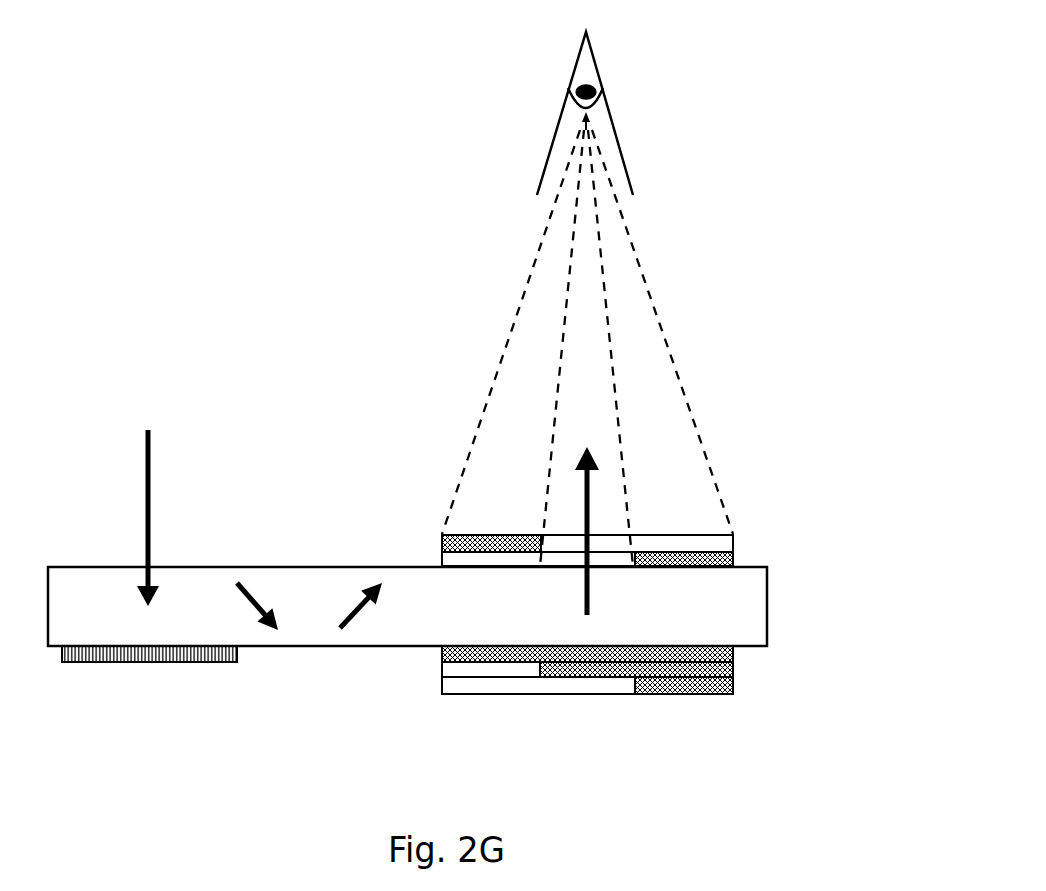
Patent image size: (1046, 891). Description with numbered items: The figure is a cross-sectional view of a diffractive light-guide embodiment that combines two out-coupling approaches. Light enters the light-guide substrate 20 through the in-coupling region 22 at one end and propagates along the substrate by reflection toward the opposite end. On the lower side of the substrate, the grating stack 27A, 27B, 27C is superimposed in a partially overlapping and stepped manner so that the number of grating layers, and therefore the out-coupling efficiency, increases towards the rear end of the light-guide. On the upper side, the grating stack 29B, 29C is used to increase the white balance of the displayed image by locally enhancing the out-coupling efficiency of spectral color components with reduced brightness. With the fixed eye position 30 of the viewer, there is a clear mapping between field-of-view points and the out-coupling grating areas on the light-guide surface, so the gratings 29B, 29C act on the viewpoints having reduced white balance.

The light guide substrate 20 is at (293, 567).
The light source / input coupler 22 is at (150, 662).
The grating layer 27A is at (733, 655).
The grating layer 27B is at (733, 670).
The grating layer 27C is at (733, 690).
The multilayer grating structure 29B is at (733, 559).
The multilayer grating structure 29C is at (485, 538).
The eye position 30 is at (597, 71).